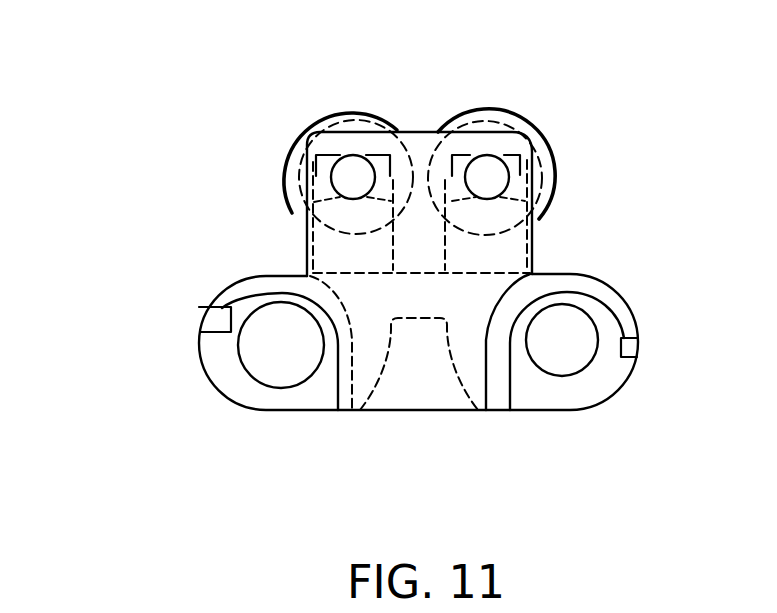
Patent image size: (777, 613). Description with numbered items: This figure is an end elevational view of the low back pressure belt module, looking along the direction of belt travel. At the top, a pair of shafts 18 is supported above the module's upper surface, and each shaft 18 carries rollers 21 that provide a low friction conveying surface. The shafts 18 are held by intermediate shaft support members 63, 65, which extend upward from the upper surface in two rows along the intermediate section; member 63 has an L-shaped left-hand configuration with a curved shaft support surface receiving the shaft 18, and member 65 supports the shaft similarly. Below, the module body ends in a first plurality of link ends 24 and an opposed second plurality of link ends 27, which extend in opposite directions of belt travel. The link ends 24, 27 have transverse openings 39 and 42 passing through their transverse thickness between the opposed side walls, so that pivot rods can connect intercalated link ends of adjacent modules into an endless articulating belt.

The shaft 18 is at (353, 175).
The roller 21 is at (307, 143).
The first plurality of link ends 24 is at (207, 347).
The second plurality of link ends 27 is at (633, 360).
The transverse opening 39 is at (280, 382).
The transverse opening 42 is at (580, 327).
The intermediate shaft support member 63 is at (323, 160).
The intermediate shaft support member 65 is at (388, 165).